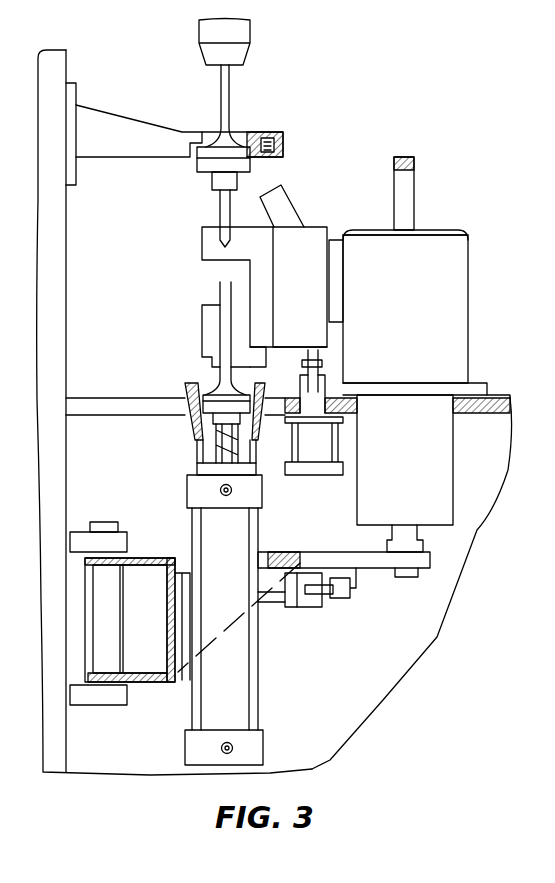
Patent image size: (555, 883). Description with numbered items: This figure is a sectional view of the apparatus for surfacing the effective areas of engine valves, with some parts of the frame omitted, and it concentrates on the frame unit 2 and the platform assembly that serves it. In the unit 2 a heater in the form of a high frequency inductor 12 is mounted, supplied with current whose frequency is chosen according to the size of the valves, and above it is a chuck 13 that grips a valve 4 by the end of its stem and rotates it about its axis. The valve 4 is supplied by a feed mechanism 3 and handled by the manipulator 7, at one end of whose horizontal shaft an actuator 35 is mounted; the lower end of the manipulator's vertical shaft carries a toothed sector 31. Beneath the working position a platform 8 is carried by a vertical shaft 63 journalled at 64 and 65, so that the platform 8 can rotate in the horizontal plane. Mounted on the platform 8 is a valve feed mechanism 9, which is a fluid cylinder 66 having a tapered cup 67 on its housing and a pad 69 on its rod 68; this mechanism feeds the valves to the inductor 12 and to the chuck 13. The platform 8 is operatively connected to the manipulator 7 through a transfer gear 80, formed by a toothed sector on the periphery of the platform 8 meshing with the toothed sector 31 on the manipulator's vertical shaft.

The unit 2 is at (493, 396).
The feed mechanism 3 is at (55, 201).
The valve 4 is at (229, 87).
The manipulator 7 is at (440, 327).
The platform 8 is at (167, 608).
The valve feed mechanism 9 is at (187, 493).
The high frequency inductor 12 is at (284, 148).
The chuck 13 is at (238, 32).
The toothed sector 31 is at (367, 560).
The actuator 35 is at (284, 284).
The vertical shaft 63 is at (100, 522).
The journal 64 is at (108, 542).
The journal 65 is at (97, 698).
The fluid cylinder 66 is at (258, 657).
The tapered cup 67 is at (185, 394).
The rod 68 is at (222, 459).
The pad 69 is at (217, 408).
The transfer gear 80 is at (311, 553).